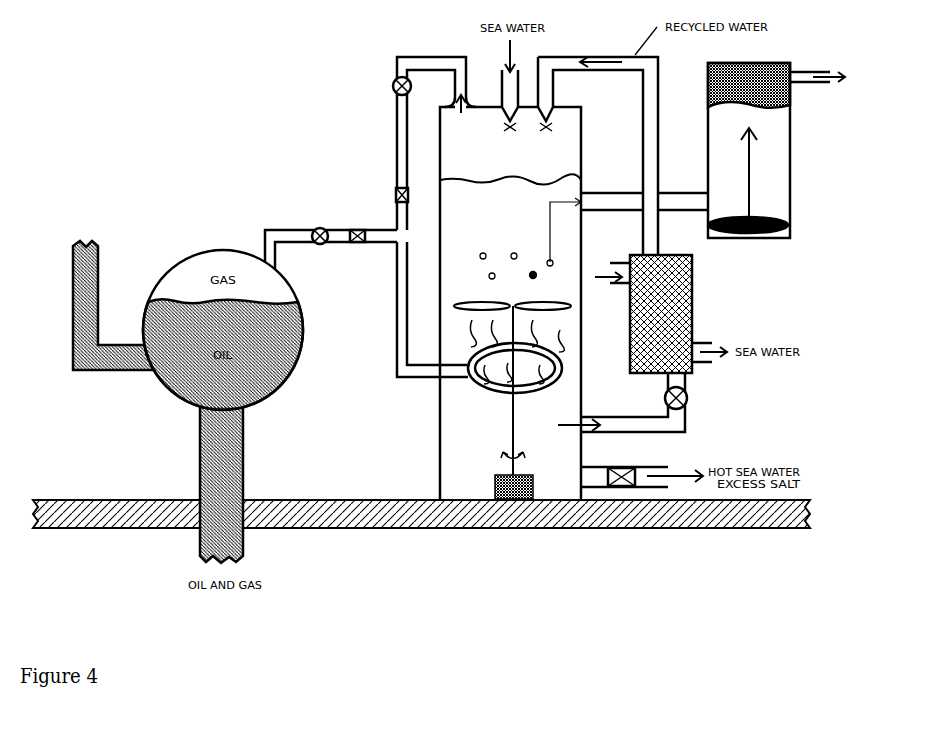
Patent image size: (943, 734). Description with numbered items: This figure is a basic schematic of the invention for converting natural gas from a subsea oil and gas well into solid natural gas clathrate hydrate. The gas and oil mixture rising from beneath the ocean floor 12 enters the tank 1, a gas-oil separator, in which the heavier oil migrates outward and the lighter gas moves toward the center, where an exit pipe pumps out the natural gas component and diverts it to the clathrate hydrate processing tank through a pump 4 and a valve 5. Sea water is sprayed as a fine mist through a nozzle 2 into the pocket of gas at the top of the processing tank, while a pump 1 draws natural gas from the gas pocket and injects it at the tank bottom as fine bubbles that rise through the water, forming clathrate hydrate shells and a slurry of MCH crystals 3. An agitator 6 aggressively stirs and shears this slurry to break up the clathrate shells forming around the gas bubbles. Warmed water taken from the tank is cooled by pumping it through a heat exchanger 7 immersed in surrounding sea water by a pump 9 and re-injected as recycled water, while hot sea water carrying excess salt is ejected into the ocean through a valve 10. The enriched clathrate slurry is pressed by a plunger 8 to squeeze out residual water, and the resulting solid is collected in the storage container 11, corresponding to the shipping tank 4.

The tank 1 is at (394, 84).
The nozzle 2 is at (503, 114).
The MCH crystals 3 is at (480, 255).
The tank 4 is at (313, 231).
The valve 5 is at (358, 243).
The agitator 6 is at (512, 422).
The heat exchanger 7 is at (692, 297).
The plunger 8 is at (767, 230).
The pump 9 is at (687, 400).
The valve 10 is at (647, 467).
The storage container 11 is at (811, 150).
The ocean floor 12 is at (421, 505).